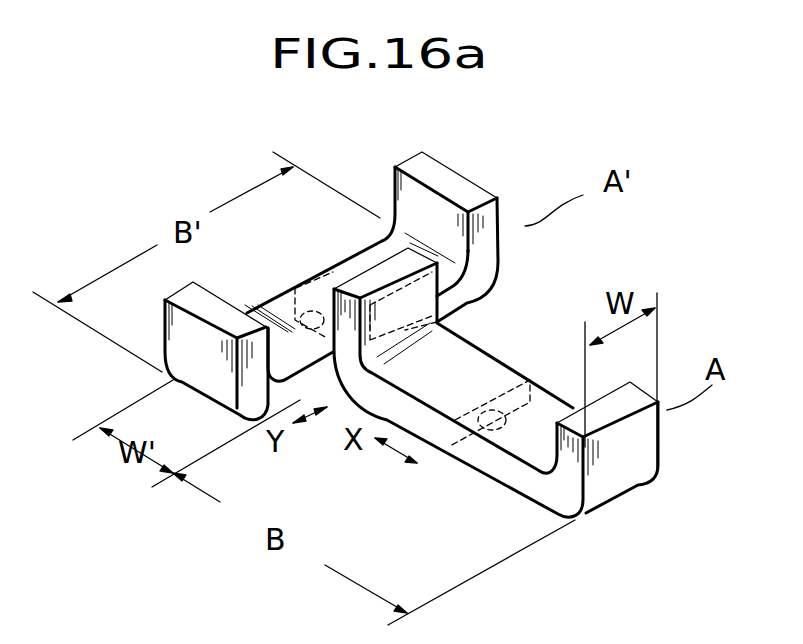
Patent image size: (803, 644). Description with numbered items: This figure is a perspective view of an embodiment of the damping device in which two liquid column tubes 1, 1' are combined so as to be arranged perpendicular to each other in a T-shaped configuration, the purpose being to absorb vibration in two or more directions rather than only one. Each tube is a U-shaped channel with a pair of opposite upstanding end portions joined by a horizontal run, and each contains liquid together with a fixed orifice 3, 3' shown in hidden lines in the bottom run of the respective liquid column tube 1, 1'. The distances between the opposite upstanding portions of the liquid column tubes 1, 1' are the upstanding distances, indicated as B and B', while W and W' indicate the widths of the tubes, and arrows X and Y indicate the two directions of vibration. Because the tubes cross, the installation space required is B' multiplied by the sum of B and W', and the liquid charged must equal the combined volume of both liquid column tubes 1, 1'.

The liquid column tube 1 is at (496, 407).
The liquid column tube 1' is at (335, 276).
The orifice 3 is at (482, 473).
The orifice 3' is at (295, 285).